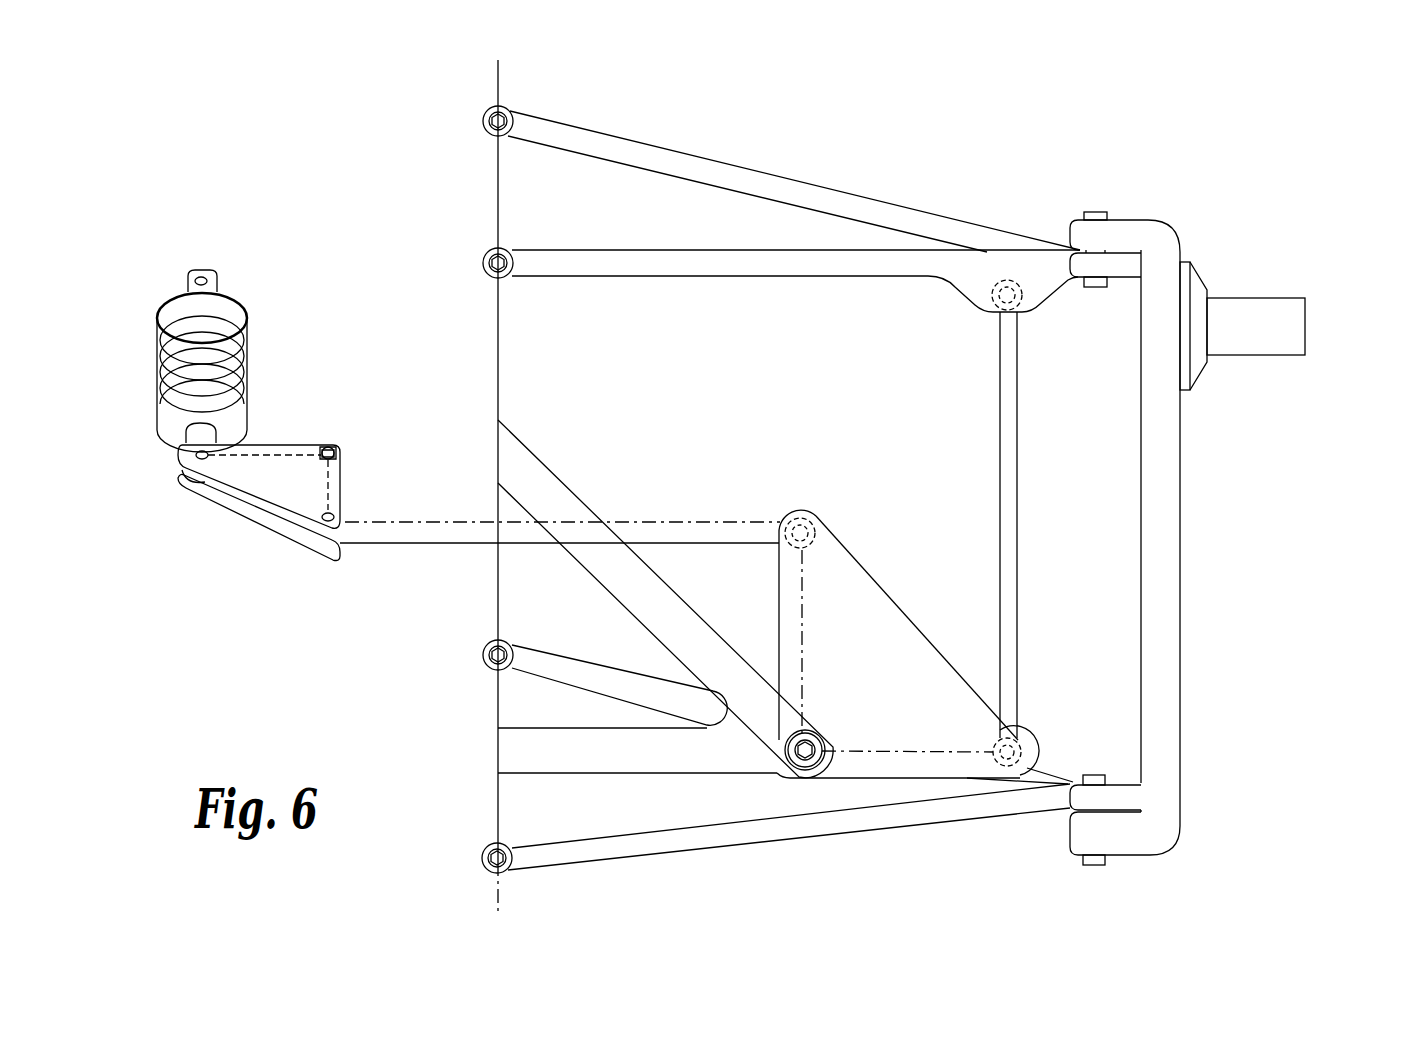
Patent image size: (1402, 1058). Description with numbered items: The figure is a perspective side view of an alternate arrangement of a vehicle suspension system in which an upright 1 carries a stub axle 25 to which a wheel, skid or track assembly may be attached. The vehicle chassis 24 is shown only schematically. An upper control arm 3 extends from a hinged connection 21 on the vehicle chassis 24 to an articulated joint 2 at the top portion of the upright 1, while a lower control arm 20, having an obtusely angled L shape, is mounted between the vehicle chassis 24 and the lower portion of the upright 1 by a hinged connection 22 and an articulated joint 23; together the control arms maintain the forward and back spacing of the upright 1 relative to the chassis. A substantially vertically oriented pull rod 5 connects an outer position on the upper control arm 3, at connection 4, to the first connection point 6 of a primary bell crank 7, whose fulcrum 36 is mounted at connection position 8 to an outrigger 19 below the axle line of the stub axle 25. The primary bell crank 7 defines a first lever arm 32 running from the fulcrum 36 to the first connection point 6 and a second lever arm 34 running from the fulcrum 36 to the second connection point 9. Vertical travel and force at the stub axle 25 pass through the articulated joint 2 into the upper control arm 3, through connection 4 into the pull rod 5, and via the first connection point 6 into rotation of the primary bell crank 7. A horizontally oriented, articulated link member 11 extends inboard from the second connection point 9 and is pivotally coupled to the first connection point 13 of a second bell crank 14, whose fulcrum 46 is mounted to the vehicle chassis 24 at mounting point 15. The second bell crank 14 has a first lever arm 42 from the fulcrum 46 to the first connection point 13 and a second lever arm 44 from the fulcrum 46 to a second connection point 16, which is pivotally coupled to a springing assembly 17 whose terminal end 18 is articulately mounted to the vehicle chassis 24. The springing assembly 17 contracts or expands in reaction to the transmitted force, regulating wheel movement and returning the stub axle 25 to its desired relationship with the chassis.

The upright 1 is at (1163, 735).
The articulated joint 2 is at (1118, 262).
The upper control arm 3 is at (832, 185).
The connection 4 is at (1010, 289).
The pull rod 5 is at (1001, 427).
The first connection point 6 is at (1015, 745).
The primary bell crank 7 is at (893, 624).
The connection position 8 is at (795, 752).
The second connection point 9 is at (803, 520).
The horizontal link member 11 is at (443, 546).
The first connection point 13 is at (340, 515).
The second bell crank 14 is at (250, 505).
The mounting point 15 is at (326, 444).
The second connection point 16 is at (192, 455).
The springing assembly 17 is at (154, 361).
The terminal end 18 is at (210, 281).
The outrigger 19 is at (553, 482).
The lower control arm 20 is at (591, 660).
The hinged connection 21 is at (481, 113).
The hinged connection 22 is at (487, 668).
The articulated joint 23 is at (1110, 800).
The vehicle chassis 24 is at (370, 277).
The stub axle 25 is at (1305, 326).
The first lever arm 32 is at (874, 752).
The second lever arm 34 is at (812, 696).
The fulcrum 36 is at (810, 770).
The first lever arm 42 is at (333, 490).
The second lever arm 44 is at (279, 449).
The fulcrum 46 is at (339, 450).